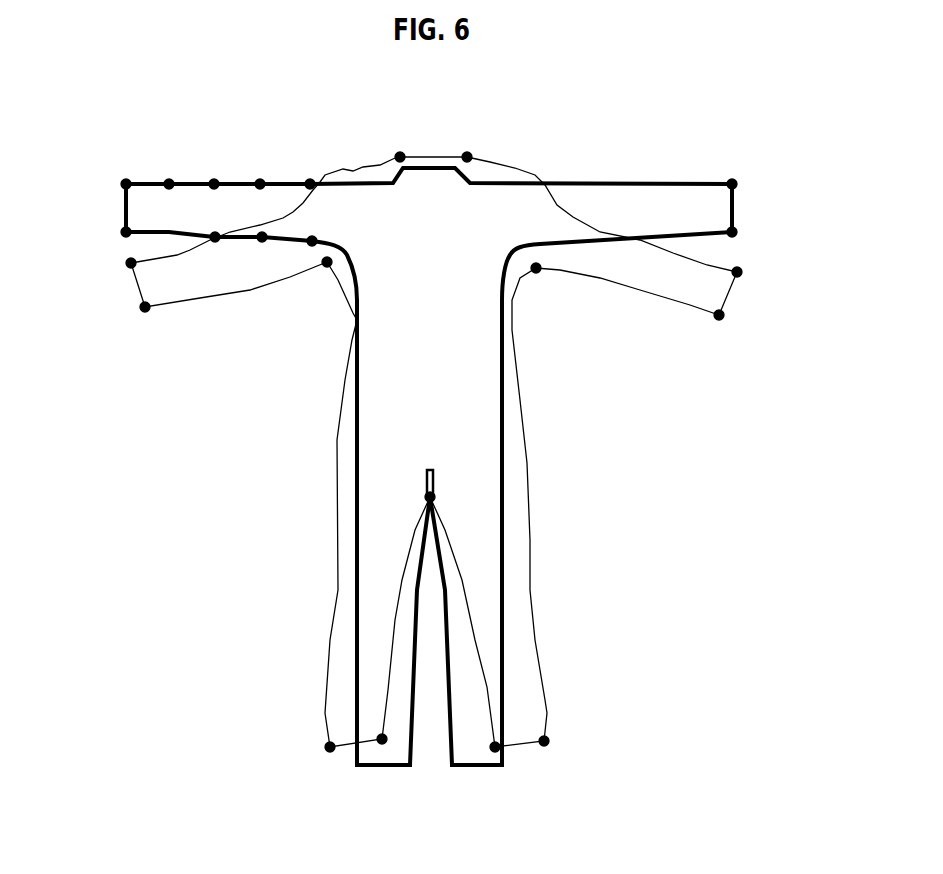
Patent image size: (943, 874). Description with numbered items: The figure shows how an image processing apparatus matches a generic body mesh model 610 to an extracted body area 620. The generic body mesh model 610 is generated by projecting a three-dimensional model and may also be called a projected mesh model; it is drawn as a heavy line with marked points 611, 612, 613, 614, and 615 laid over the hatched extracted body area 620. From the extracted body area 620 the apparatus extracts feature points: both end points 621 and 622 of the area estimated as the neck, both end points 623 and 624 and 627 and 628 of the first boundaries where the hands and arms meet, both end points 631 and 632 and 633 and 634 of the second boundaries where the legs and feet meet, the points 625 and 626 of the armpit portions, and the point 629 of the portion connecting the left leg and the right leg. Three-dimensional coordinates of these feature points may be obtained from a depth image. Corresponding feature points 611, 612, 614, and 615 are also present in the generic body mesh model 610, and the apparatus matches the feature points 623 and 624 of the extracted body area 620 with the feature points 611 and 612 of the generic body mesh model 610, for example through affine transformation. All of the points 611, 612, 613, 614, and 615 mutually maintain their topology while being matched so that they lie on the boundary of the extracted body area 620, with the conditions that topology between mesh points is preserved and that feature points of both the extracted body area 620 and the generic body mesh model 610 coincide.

The generic body mesh model 610 is at (287, 183).
The feature point 611 is at (126, 179).
The feature point 612 is at (121, 232).
The point 613 is at (169, 179).
The feature point 614 is at (737, 184).
The feature point 615 is at (737, 232).
The extracted body area 620 is at (202, 300).
The end point 621 is at (400, 152).
The end point 622 is at (467, 152).
The end point 623 is at (126, 263).
The end point 624 is at (140, 307).
The point of armpit portion 625 is at (327, 267).
The point of armpit portion 626 is at (536, 273).
The end point 627 is at (742, 272).
The end point 628 is at (724, 315).
The point of leg-connecting portion 629 is at (435, 496).
The end point 631 is at (330, 752).
The end point 632 is at (382, 744).
The end point 633 is at (495, 752).
The end point 634 is at (544, 746).